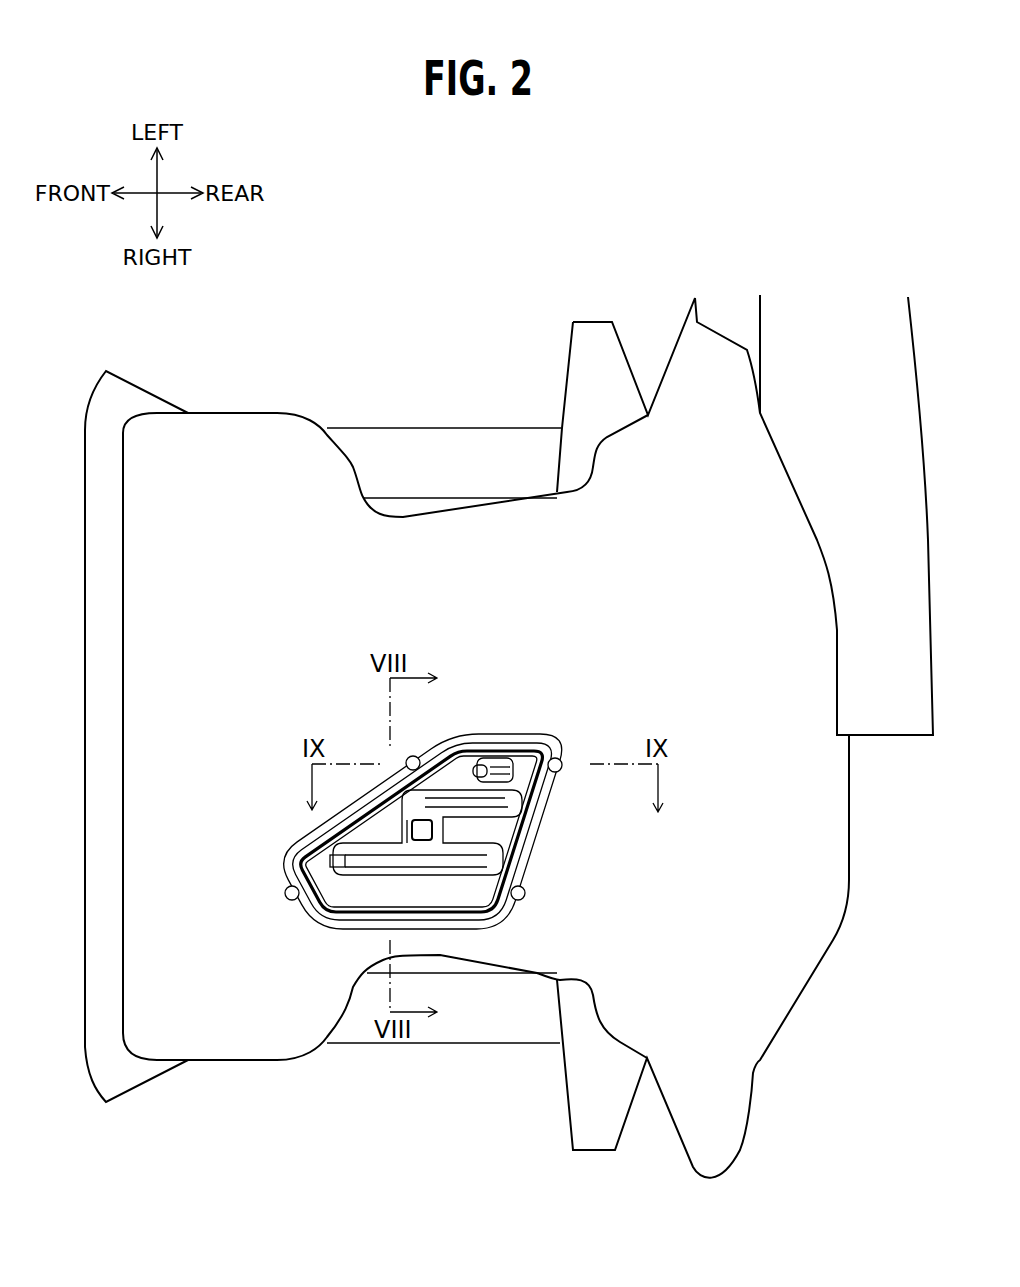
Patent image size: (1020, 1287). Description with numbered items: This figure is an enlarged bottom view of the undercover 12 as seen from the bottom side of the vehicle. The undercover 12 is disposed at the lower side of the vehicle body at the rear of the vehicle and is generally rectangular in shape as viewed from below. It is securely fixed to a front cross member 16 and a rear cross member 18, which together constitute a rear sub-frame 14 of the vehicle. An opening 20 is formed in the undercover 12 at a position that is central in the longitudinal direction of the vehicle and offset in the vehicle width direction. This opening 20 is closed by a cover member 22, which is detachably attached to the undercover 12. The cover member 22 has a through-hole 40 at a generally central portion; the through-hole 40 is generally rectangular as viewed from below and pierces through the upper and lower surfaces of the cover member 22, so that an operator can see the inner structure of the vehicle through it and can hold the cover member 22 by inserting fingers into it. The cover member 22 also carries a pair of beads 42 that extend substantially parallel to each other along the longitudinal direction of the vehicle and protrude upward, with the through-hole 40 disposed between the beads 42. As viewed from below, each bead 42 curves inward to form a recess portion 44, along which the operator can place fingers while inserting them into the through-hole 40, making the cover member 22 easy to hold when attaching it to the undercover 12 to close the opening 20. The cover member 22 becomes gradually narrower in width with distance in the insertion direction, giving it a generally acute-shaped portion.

The undercover 12 is at (231, 1093).
The rear sub-frame 14 is at (445, 382).
The front cross member 16 is at (84, 734).
The rear cross member 18 is at (628, 1112).
The opening 20 is at (497, 923).
The cover member 22 is at (308, 905).
The through-hole 40 is at (428, 838).
The bead 42 is at (417, 858).
The recess portion 44 is at (458, 800).